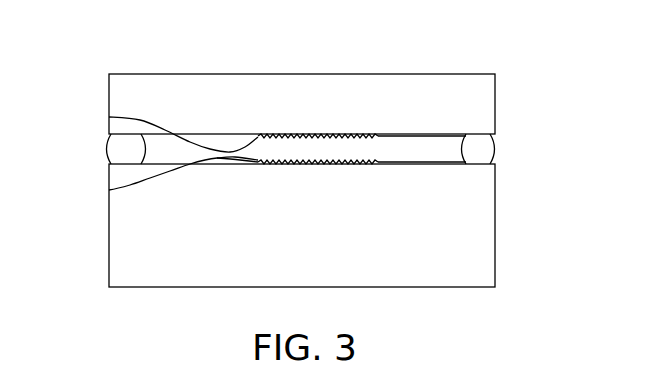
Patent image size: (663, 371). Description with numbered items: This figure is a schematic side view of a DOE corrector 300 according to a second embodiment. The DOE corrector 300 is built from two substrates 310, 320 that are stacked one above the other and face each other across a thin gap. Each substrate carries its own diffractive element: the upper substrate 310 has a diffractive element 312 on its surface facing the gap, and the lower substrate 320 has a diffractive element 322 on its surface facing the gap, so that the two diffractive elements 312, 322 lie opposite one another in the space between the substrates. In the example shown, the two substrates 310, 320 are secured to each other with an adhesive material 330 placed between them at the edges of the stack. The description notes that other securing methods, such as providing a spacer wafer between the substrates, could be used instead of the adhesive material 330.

The DOE corrector 300 is at (96, 57).
The substrate 310 is at (495, 113).
The diffractive element 312 is at (109, 117).
The substrate 320 is at (495, 215).
The diffractive element 322 is at (109, 190).
The adhesive material 330 is at (495, 150).